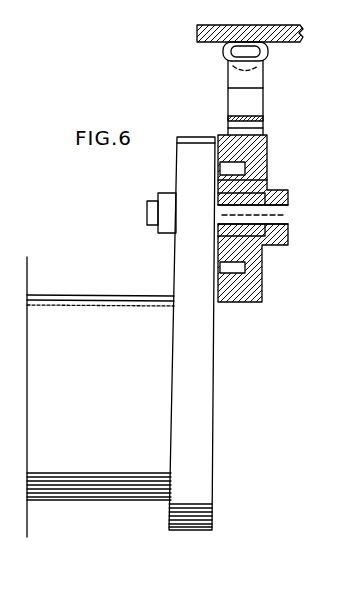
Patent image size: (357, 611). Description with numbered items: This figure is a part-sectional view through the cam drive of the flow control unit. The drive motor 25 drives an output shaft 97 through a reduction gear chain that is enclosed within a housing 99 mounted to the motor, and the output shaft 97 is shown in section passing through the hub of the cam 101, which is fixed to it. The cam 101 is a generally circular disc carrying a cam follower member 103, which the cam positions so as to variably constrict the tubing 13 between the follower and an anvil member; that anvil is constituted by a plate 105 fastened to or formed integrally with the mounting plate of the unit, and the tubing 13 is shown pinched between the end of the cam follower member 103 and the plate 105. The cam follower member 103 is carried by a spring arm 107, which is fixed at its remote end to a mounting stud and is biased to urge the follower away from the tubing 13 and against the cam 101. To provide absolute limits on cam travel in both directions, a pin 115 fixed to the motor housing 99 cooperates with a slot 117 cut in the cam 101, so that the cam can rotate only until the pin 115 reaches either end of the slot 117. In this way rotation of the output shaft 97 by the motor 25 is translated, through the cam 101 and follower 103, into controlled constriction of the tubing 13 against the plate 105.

The plate 105 is at (206, 43).
The tubing 13 is at (268, 53).
The cam follower member 103 is at (258, 103).
The spring arm 107 is at (232, 118).
The cam 101 is at (260, 297).
The output shaft 97 is at (284, 218).
The pin 115 is at (240, 166).
The slot 117 is at (236, 268).
The housing 99 is at (205, 363).
The drive motor 25 is at (129, 303).